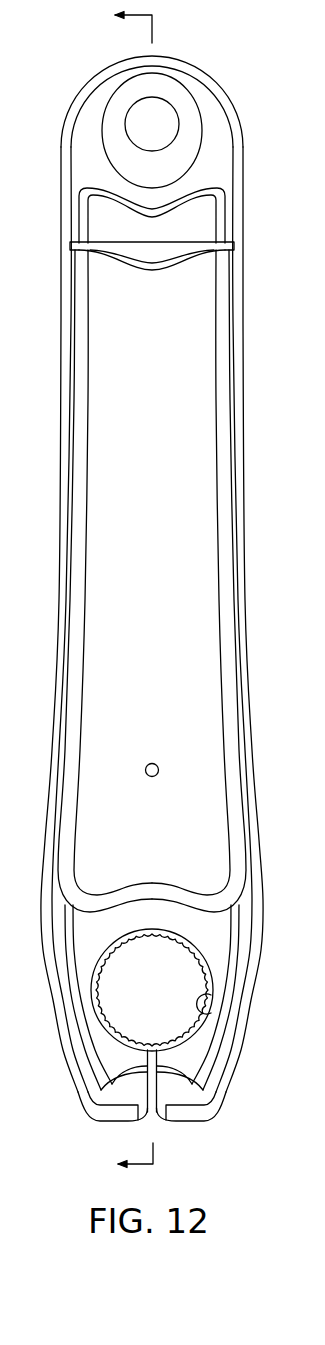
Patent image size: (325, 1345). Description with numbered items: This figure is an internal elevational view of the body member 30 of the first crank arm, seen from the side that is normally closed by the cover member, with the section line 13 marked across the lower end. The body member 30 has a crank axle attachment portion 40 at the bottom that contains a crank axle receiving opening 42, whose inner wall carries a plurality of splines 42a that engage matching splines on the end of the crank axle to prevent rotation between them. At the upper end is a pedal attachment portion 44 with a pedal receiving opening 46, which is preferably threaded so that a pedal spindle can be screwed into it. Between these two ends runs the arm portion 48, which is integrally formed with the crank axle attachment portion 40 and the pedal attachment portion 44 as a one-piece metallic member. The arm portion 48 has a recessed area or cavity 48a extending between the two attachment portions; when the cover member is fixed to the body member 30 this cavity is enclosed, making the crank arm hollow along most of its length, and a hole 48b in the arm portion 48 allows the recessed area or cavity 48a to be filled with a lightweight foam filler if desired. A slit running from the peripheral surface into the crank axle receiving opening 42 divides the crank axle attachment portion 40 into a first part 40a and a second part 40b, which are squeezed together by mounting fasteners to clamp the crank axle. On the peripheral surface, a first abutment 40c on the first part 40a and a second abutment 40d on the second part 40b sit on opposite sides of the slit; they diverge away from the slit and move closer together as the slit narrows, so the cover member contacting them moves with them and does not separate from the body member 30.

The section line 13- 13 is at (118, 591).
The body member 30 is at (270, 145).
The crank axle attachment portion 40 is at (95, 940).
The first part 40a is at (120, 1100).
The second part 40b is at (200, 1102).
The first abutment 40c is at (130, 1127).
The second abutment 40d is at (178, 1127).
The crank axle receiving opening 42 is at (170, 972).
The splines 42a is at (202, 1017).
The pedal attachment portion 44 is at (92, 168).
The pedal receiving opening 46 is at (147, 122).
The arm portion 48 is at (127, 484).
The recessed area or cavity 48a is at (175, 633).
The hole 48b is at (157, 775).